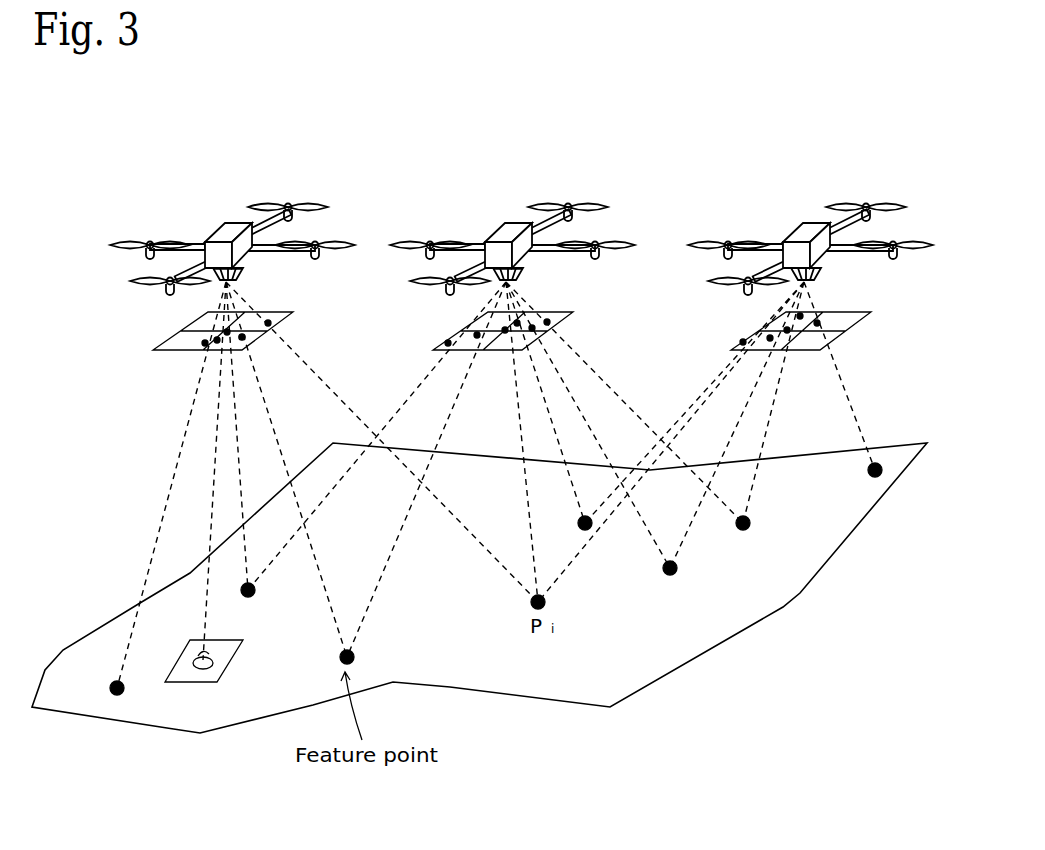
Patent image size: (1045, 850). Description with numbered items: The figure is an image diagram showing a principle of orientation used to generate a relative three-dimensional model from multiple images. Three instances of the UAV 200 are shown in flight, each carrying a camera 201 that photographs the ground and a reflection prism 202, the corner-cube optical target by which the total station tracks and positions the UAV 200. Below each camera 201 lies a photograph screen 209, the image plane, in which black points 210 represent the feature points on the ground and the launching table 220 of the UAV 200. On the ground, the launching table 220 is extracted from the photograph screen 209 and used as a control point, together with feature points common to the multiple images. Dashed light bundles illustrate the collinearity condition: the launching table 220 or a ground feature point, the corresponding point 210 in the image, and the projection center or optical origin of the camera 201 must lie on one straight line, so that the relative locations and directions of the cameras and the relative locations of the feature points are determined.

The UAV 200 is at (229, 214).
The camera 201 is at (213, 280).
The reflection prism 202 is at (240, 278).
The photograph screen 209 is at (172, 348).
The black points 210 is at (243, 337).
The launching table 220 is at (206, 696).